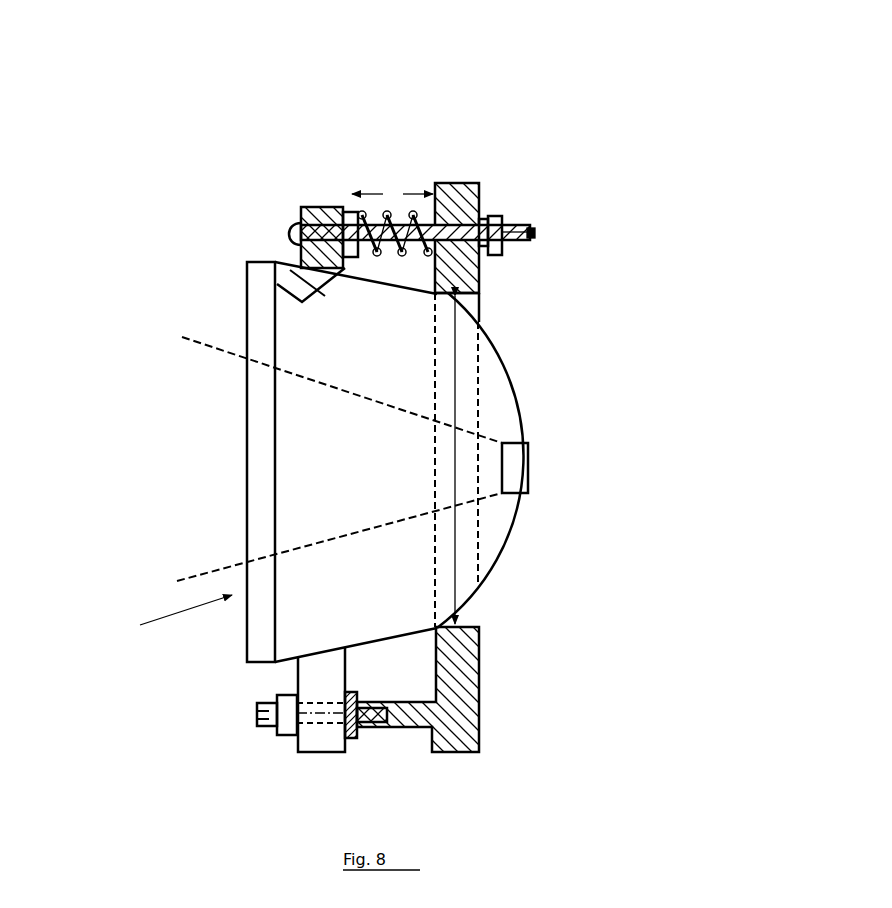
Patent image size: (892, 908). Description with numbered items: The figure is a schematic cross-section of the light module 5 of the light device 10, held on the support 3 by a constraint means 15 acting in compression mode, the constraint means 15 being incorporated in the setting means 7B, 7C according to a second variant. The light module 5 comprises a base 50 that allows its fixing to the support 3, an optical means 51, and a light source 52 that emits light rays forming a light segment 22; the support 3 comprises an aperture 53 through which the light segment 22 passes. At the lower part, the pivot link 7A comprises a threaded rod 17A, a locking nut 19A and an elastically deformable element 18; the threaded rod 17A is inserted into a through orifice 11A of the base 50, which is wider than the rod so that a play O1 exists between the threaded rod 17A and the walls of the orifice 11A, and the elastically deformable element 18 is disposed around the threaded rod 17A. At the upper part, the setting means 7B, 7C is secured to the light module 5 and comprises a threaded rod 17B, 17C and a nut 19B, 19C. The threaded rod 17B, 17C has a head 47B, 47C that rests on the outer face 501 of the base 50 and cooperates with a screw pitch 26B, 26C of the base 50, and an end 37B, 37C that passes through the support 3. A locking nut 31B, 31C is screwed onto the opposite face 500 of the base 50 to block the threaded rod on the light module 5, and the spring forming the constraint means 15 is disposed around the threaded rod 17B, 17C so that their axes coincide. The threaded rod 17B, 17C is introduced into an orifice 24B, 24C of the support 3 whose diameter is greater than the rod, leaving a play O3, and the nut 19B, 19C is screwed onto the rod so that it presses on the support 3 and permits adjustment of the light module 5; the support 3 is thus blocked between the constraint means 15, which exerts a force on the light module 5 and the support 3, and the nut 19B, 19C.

The light device 10 is at (372, 78).
The support 3 is at (464, 184).
The light module 5 is at (174, 618).
The pivot link 7A is at (298, 740).
The setting means 7B is at (457, 242).
The setting means 7C is at (457, 242).
The constraint means 15 is at (481, 200).
The threaded rod 17A is at (350, 712).
The threaded rod 17B is at (493, 249).
The threaded rod 17C is at (518, 243).
The elastically deformable element 18 is at (357, 740).
The locking nut 19A is at (288, 738).
The nut 19B is at (578, 212).
The nut 19C is at (498, 216).
The light segment 22 is at (192, 338).
The orifice 24B is at (509, 321).
The orifice 24C is at (458, 293).
The screw pitch 26B is at (274, 203).
The screw pitch 26C is at (313, 206).
The locking nut 31B is at (387, 284).
The locking nut 31C is at (398, 272).
The end 37B is at (590, 222).
The end 37C is at (538, 236).
The head 47B is at (214, 210).
The head 47C is at (292, 226).
The base 50 is at (324, 250).
The opposite face 500 is at (354, 266).
The outer face 501 is at (262, 263).
The optical means 51 is at (522, 407).
The light source 52 is at (515, 468).
The aperture 53 is at (457, 444).
The play O1 is at (313, 727).
The play O3 is at (465, 254).
The through orifice 11A is at (335, 735).